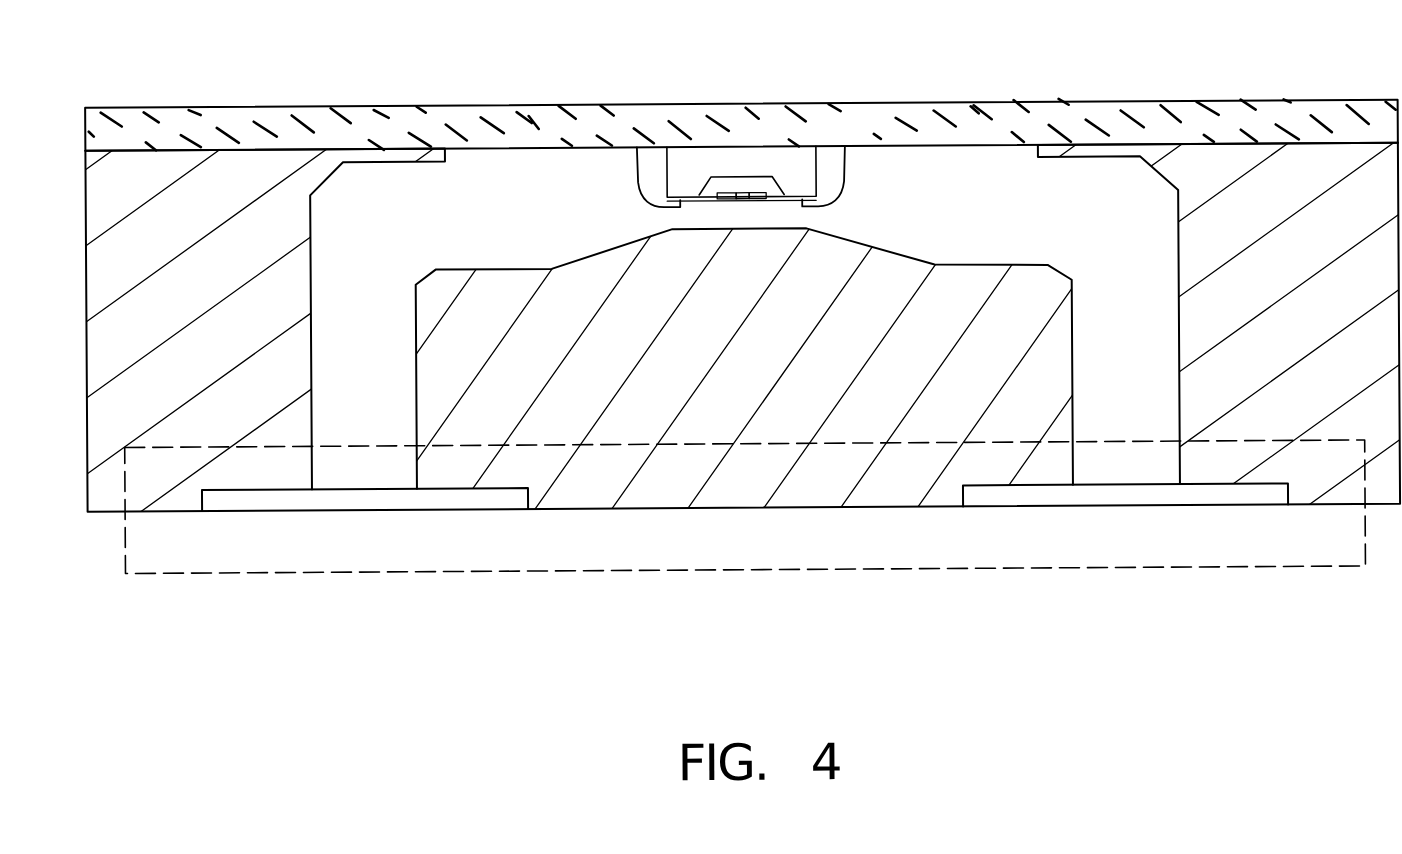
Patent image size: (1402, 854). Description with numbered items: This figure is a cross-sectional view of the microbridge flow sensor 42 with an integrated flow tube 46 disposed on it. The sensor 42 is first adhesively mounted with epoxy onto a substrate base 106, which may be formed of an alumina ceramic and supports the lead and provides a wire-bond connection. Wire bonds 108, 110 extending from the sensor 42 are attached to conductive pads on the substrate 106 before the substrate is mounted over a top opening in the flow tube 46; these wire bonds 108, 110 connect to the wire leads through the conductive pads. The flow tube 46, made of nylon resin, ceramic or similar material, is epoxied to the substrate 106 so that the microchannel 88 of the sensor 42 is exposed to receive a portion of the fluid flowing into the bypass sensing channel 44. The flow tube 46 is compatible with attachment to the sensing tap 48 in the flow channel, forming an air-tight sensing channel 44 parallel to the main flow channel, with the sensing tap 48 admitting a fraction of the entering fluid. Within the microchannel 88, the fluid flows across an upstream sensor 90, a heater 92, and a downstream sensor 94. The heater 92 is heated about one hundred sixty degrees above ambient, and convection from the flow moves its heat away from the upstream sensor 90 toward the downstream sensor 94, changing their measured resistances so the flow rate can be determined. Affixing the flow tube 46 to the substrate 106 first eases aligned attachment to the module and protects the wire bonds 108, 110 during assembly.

The substrate base 106 is at (1278, 104).
The flow sensor 42 is at (821, 166).
The microchannel 88 is at (757, 180).
The wire bond 108 is at (648, 197).
The wire bond 110 is at (846, 203).
The upstream sensor 90 is at (727, 201).
The heater 92 is at (743, 201).
The downstream sensor 94 is at (761, 201).
The bypass sensing channel 44 is at (395, 226).
The flow tube 46 is at (1353, 232).
The sensing tap 48 is at (1231, 567).